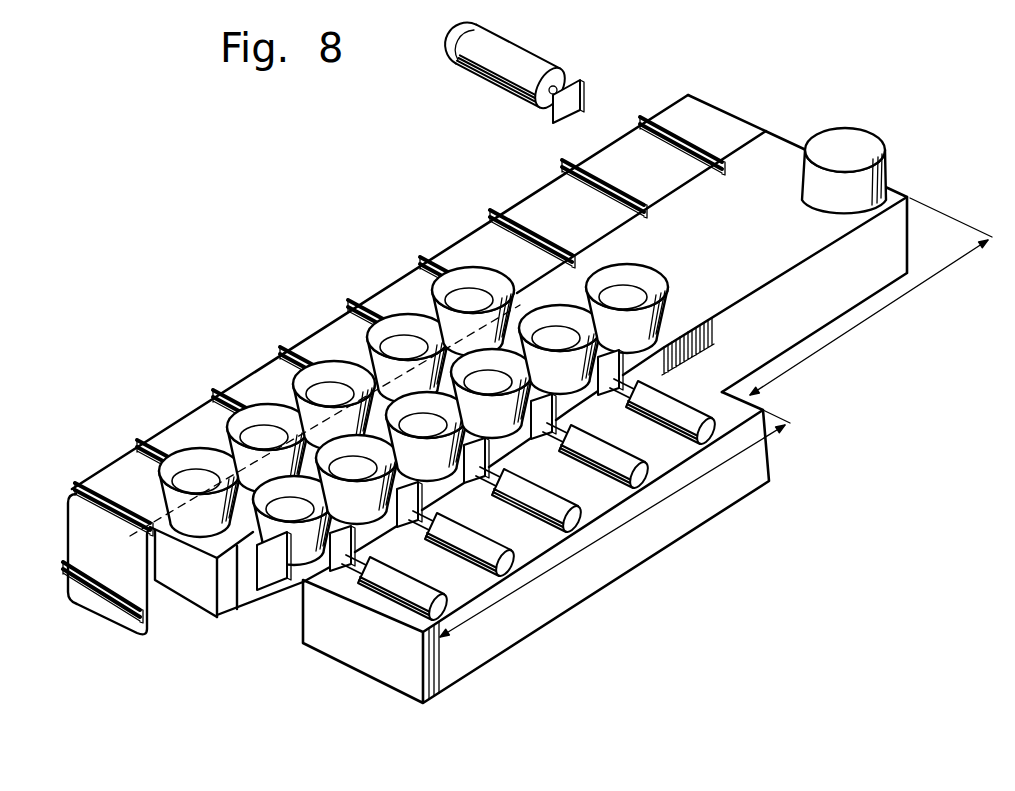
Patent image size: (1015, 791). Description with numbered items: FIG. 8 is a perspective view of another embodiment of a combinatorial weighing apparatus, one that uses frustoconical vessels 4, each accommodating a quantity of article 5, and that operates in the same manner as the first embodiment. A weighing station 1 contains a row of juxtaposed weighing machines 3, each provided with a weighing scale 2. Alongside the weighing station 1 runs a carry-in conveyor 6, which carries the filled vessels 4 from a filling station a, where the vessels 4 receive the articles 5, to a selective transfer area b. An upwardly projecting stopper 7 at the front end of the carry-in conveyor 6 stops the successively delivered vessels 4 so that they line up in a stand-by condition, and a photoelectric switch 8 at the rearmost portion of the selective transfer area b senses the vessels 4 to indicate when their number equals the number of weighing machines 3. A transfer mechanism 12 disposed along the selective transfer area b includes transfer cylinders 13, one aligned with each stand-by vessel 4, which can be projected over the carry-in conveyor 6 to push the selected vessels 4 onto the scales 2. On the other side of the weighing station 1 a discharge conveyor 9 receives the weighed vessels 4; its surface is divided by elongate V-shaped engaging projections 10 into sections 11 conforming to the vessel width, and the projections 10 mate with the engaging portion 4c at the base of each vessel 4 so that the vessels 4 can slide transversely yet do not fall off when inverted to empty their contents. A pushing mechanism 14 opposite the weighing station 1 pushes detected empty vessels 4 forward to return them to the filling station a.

The weighing station 1 is at (182, 618).
The weighing scale 2 is at (212, 553).
The weighing machine 3 is at (207, 616).
The vessel 4 is at (160, 500).
The engaging portion 4c is at (676, 332).
The article 5 is at (197, 478).
The carry-in conveyor 6 is at (762, 278).
The stopper 7 is at (281, 592).
The photoelectric switch 8 is at (642, 384).
The discharge conveyor 9 is at (257, 386).
The engaging projection 10 is at (642, 117).
The section 11 is at (214, 416).
The transfer mechanism 12 is at (690, 400).
The transfer cylinder 13 is at (662, 428).
The pushing mechanism 14 is at (478, 70).
The filling station a is at (871, 296).
The selective transfer area b is at (615, 523).